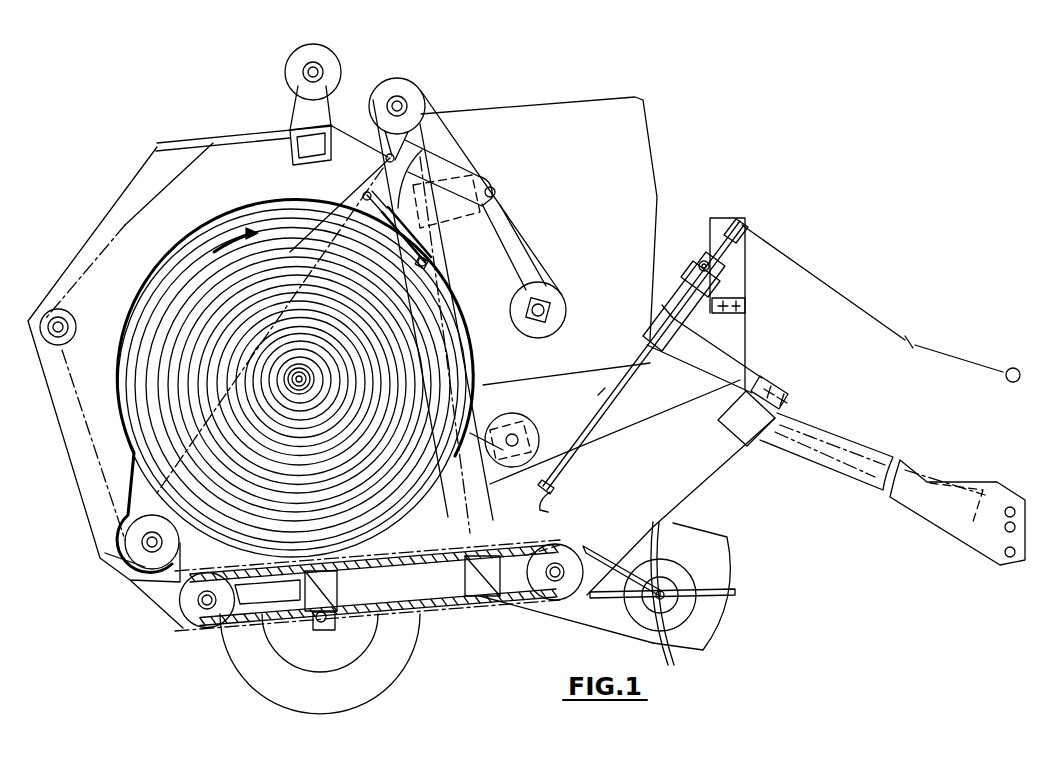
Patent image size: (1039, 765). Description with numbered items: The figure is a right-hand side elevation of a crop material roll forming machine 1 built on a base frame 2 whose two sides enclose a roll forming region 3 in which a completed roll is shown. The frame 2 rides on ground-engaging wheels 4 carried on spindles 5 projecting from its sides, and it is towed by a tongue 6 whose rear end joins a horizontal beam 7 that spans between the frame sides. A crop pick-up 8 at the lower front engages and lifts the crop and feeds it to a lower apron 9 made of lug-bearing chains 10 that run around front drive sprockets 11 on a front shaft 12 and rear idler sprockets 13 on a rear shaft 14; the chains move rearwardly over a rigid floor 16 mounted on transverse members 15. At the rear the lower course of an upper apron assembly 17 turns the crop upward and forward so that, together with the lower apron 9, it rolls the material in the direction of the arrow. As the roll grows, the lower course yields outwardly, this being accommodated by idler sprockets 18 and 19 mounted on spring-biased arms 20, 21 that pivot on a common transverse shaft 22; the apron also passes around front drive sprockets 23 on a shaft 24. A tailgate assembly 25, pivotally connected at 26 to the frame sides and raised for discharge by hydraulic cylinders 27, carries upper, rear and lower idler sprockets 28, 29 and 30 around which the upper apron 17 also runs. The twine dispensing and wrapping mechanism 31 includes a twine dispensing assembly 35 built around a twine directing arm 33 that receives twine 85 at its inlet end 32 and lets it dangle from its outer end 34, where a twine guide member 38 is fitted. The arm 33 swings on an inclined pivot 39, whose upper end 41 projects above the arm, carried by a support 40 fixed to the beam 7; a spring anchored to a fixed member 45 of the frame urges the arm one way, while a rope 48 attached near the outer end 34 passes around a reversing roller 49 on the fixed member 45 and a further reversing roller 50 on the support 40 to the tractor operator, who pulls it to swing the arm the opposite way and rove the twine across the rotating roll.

The crop material roll forming machine 1 is at (512, 84).
The base frame 2 is at (705, 496).
The roll forming region 3 is at (512, 518).
The ground-engaging wheel 4 is at (388, 681).
The spindle 5 is at (321, 626).
The tongue 6 is at (838, 476).
The horizontal beam 7 is at (752, 447).
The crop pick-up 8 is at (710, 616).
The lower apron 9 is at (458, 614).
The lug-bearing chain 10 is at (440, 565).
The front drive sprocket 11 is at (576, 555).
The front shaft 12 is at (555, 582).
The rear idler sprocket 13 is at (183, 614).
The shaft 14 is at (207, 597).
The transverse member 15 is at (337, 584).
The floor 16 is at (267, 596).
The upper apron assembly 17 is at (228, 118).
The idler sprocket 18 is at (552, 300).
The idler sprocket 19 is at (418, 90).
The arm 20 is at (516, 237).
The arm 21 is at (466, 167).
The common transverse shaft 22 is at (500, 195).
The front drive sprocket 23 is at (526, 432).
The shaft 24 is at (512, 434).
The tailgate assembly 25 is at (127, 202).
The pivotal connection 26 is at (367, 195).
The hydraulic cylinder 27 is at (396, 162).
The upper idler sprocket 28 is at (335, 80).
The rear idler sprocket 29 is at (56, 310).
The lower idler sprocket 30 is at (130, 583).
The twine dispensing and wrapping mechanism 31 is at (776, 268).
The inlet end 32 is at (699, 260).
The twine directing arm 33 is at (598, 395).
The outer end 34 is at (556, 500).
The twine dispensing assembly 35 is at (676, 258).
The twine guide member 38 is at (560, 487).
The pivot 39 is at (712, 320).
The support 40 is at (740, 352).
The pivot end 41 is at (680, 294).
The fixed member 45 is at (746, 247).
The rope 48 is at (873, 335).
The reversing roller 49 is at (746, 226).
The reversing roller 50 is at (737, 285).
The twine 85 is at (527, 580).